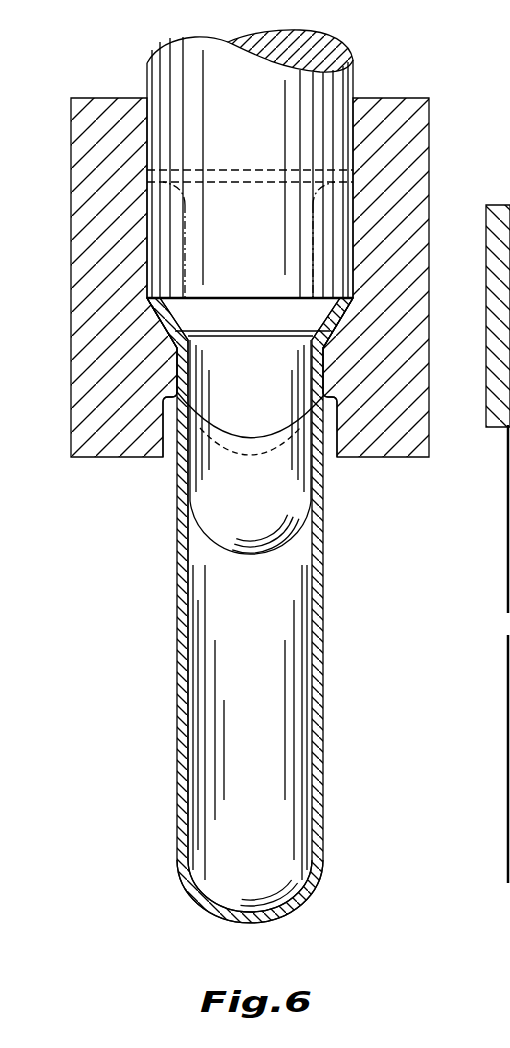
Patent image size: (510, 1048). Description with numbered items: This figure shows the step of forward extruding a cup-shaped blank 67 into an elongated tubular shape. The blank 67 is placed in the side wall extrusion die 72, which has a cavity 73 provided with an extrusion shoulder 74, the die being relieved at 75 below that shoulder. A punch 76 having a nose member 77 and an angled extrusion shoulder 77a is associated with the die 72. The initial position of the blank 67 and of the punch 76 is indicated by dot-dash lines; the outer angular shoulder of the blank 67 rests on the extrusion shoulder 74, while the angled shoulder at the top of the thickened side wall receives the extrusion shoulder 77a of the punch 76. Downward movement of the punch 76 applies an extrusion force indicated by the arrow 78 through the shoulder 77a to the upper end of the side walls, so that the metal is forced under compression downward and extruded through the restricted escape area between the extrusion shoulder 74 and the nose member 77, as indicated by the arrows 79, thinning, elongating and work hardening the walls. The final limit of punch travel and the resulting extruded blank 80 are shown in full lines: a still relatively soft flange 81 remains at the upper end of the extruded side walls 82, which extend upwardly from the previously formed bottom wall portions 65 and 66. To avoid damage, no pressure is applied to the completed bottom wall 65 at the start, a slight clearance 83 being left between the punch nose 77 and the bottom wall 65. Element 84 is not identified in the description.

The bottom wall 65 is at (243, 915).
The bottom wall portion 66 is at (180, 847).
The blank 67 is at (148, 212).
The side wall extrusion die 72 is at (411, 259).
The cavity 73 is at (350, 244).
The extrusion shoulder 74 is at (330, 346).
The relief 75 is at (342, 418).
The punch 76 is at (337, 87).
The nose member 77 is at (276, 502).
The extrusion shoulder of punch 77a is at (340, 298).
The extrusion force arrow 78 is at (252, 295).
The metal flow arrows 79 is at (335, 597).
The extruded blank 80 is at (323, 716).
The flange 81 is at (160, 318).
The extruded side walls 82 is at (183, 677).
The clearance 83 is at (240, 438).
The adjacent block 84 is at (507, 577).